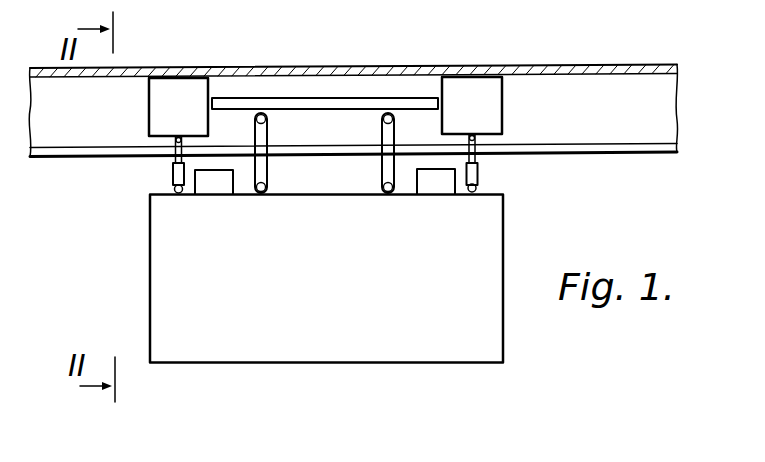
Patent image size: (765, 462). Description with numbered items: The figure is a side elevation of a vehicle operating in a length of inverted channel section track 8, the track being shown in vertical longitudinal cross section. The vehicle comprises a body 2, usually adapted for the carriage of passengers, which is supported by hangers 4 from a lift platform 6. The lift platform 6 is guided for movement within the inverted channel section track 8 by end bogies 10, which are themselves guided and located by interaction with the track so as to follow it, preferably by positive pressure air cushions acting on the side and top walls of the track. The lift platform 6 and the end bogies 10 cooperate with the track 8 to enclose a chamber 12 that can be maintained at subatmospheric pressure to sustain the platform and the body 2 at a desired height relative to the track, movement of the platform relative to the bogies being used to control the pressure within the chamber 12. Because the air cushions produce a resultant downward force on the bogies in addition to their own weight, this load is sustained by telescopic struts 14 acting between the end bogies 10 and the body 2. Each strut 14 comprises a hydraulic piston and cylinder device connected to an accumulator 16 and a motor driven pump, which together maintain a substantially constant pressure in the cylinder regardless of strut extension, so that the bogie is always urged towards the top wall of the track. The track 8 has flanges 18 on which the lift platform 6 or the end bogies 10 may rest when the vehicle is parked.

The body 2 is at (310, 281).
The hangers 4 is at (268, 128).
The lift platform 6 is at (328, 102).
The inverted channel section track 8 is at (614, 61).
The end bogies 10 is at (178, 98).
The chamber 12 is at (257, 92).
The telescopic struts 14 is at (174, 176).
The accumulator 16 is at (215, 190).
The flanges 18 is at (612, 148).